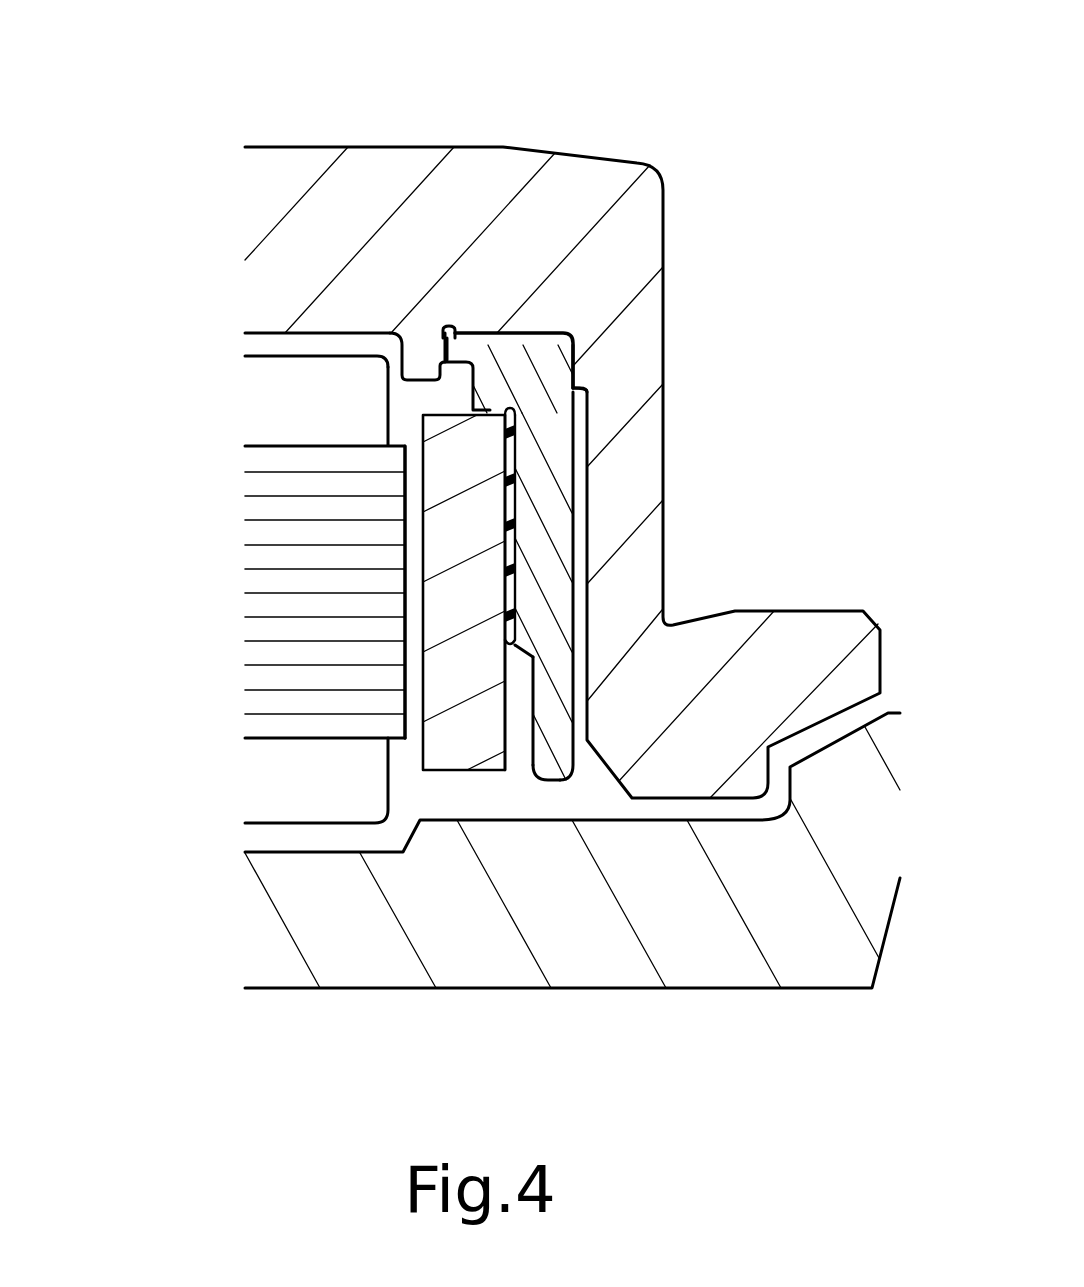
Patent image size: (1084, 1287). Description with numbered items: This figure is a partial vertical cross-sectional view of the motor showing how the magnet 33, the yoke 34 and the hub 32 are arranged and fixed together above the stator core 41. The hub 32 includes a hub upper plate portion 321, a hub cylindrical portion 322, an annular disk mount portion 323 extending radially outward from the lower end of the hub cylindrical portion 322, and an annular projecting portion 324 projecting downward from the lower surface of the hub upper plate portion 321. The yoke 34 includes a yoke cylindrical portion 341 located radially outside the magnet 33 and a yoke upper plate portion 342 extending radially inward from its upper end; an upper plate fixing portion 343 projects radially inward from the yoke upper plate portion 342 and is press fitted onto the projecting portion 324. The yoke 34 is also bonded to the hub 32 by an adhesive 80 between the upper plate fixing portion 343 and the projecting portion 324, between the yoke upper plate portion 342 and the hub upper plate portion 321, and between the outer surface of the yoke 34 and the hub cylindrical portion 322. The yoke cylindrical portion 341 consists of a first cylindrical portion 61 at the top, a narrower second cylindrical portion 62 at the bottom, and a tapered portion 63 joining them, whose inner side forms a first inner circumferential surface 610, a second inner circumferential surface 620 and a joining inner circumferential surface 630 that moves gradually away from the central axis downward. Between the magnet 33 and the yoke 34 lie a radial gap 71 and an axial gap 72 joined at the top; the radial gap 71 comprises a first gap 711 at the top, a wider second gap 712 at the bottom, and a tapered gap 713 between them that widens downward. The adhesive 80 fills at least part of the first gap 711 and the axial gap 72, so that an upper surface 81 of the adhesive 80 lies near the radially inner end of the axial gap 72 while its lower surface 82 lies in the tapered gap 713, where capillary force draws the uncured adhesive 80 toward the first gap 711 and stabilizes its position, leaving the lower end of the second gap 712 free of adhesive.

The hub 32 is at (691, 205).
The hub upper plate portion 321 is at (373, 207).
The hub cylindrical portion 322 is at (628, 386).
The disk mount portion 323 is at (795, 677).
The projecting portion 324 is at (400, 352).
The magnet 33 is at (445, 455).
The yoke 34 is at (560, 800).
The yoke cylindrical portion 341 is at (797, 430).
The yoke upper plate portion 342 is at (525, 361).
The upper plate fixing portion 343 is at (465, 350).
The stator core 41 is at (285, 530).
The first cylindrical portion 61 is at (545, 507).
The second cylindrical portion 62 is at (588, 642).
The tapered portion 63 is at (533, 637).
The first inner circumferential surface 610 is at (505, 532).
The second inner circumferential surface 620 is at (532, 652).
The joining inner circumferential surface 630 is at (513, 660).
The radial gap 71 is at (95, 625).
The first gap 711 is at (497, 585).
The second gap 712 is at (497, 732).
The tapered gap 713 is at (499, 660).
The axial gap 72 is at (490, 411).
The adhesive 80 is at (505, 432).
The upper surface of the adhesive 81 is at (468, 407).
The lower surface of the adhesive 82 is at (505, 685).